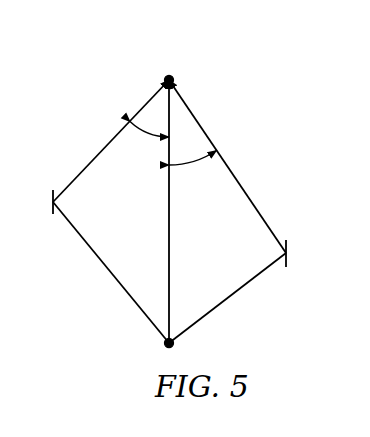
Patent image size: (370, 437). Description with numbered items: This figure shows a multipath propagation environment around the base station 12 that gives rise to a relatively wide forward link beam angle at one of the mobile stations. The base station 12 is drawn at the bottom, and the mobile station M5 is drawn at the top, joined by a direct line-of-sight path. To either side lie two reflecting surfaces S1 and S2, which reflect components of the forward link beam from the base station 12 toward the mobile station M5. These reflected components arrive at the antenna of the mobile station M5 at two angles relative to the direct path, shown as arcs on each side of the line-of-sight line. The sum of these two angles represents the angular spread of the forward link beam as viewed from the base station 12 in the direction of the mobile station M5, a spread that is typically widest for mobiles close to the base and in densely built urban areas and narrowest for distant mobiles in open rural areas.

The base station 12 is at (160, 345).
The mobile station M5 is at (178, 80).
The surface S1 is at (58, 201).
The surface S2 is at (280, 252).